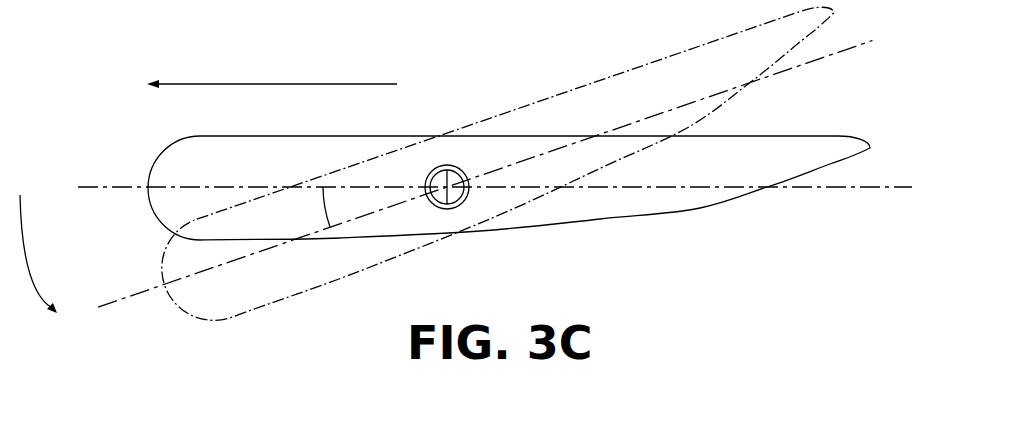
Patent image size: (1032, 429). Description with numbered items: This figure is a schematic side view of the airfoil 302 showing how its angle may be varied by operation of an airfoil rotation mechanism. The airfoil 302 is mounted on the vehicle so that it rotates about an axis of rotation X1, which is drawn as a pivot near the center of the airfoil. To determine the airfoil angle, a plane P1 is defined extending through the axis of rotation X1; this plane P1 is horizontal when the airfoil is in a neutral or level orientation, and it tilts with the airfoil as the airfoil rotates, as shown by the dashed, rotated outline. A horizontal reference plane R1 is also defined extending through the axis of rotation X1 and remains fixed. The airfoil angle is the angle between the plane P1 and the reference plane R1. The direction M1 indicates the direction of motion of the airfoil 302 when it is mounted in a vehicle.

The airfoil 302 is at (141, 207).
The plane P1 is at (137, 293).
The horizontal reference plane R1 is at (877, 187).
The axis of rotation X1 is at (462, 206).
The direction of motion M1 is at (272, 69).